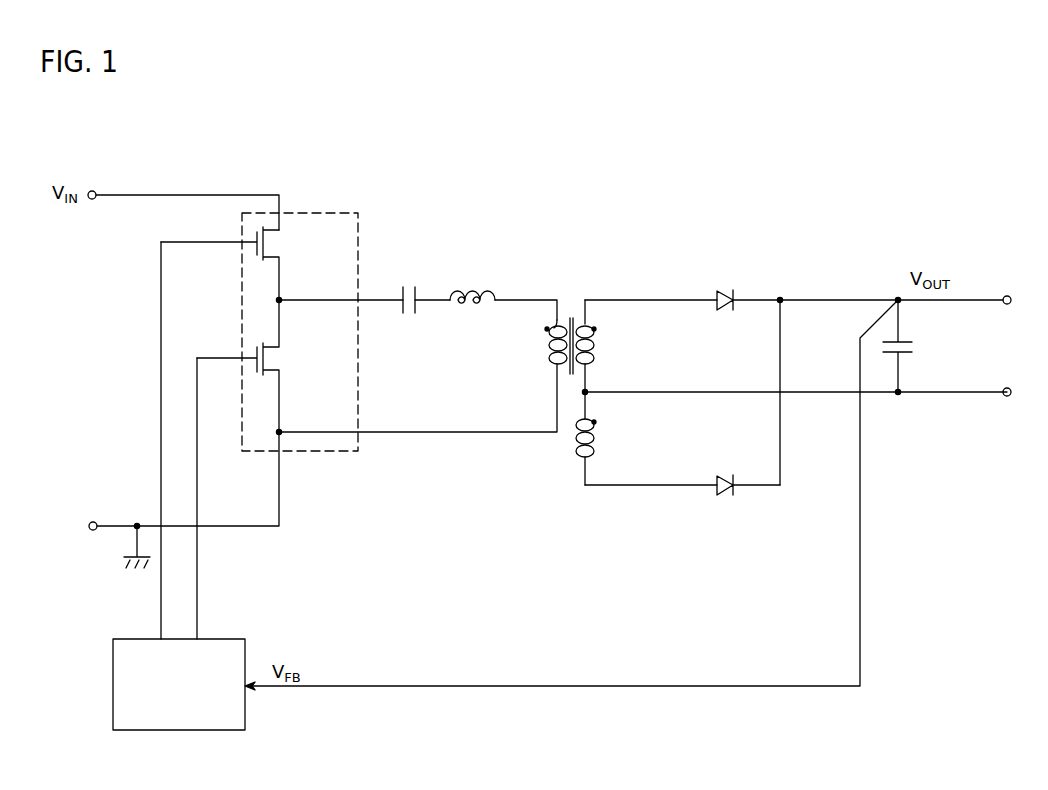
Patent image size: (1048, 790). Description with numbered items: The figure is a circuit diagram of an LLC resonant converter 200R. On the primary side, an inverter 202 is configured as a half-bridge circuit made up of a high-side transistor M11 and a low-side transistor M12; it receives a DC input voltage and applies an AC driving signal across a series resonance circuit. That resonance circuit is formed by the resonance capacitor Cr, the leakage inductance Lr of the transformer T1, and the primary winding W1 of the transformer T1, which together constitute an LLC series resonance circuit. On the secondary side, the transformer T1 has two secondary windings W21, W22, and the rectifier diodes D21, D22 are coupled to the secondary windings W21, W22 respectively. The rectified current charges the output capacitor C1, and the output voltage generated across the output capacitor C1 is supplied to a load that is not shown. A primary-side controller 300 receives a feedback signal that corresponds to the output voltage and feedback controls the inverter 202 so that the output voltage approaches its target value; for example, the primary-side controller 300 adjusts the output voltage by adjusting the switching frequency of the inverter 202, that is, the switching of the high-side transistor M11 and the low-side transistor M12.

The LLC resonant converter 200R is at (980, 121).
The inverter 202 is at (263, 312).
The primary-side controller 300 is at (180, 733).
The high-side transistor M11 is at (285, 243).
The low-side transistor M12 is at (285, 359).
The resonance capacitor Cr is at (411, 284).
The leakage inductance Lr is at (478, 290).
The transformer T1 is at (471, 357).
The primary winding W1 is at (546, 356).
The secondary winding W21 is at (601, 344).
The secondary winding W22 is at (601, 438).
The rectifier diode D21 is at (730, 288).
The rectifier diode D22 is at (727, 498).
The output capacitor C1 is at (920, 346).